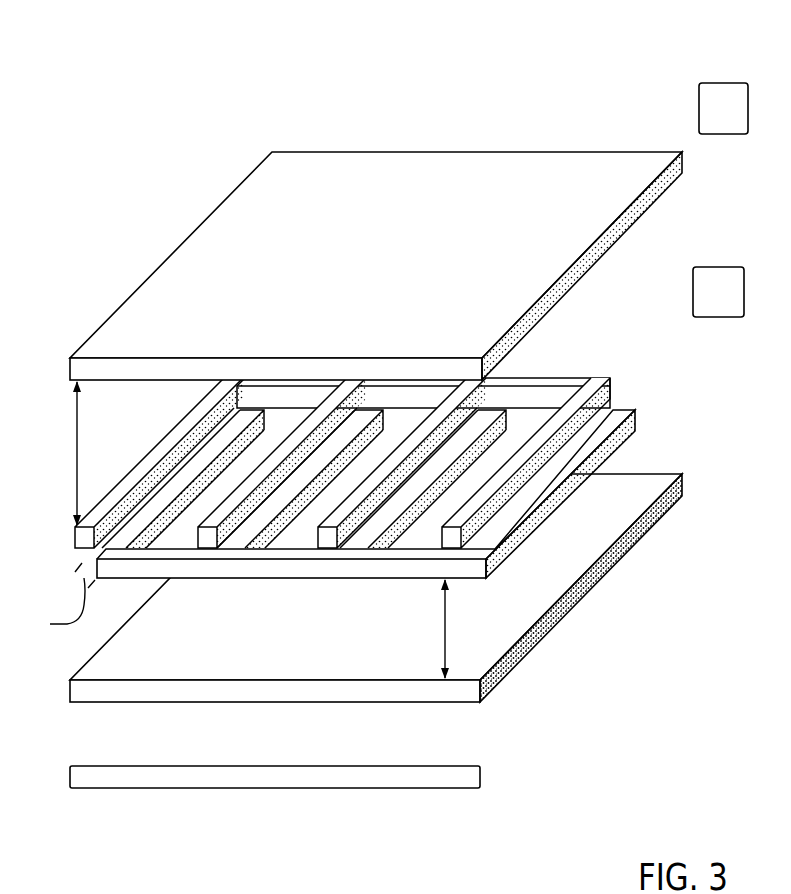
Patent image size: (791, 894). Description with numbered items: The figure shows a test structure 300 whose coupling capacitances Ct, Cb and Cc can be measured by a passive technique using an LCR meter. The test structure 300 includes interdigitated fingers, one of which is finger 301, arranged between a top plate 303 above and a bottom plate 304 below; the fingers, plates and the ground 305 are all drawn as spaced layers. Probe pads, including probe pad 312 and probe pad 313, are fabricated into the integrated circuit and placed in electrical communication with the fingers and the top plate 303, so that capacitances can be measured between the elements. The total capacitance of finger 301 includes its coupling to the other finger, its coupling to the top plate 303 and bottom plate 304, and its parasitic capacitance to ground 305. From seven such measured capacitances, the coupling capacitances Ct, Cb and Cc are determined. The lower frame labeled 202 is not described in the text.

The test structure 300 is at (512, 50).
The top plate 303 is at (397, 248).
The probe pad 313 is at (666, 152).
The probe pad 312 is at (616, 408).
The lower interdigitated electrode frame 202 is at (635, 411).
The finger 301 is at (74, 530).
The bottom plate 304 is at (345, 633).
The ground 305 is at (343, 789).